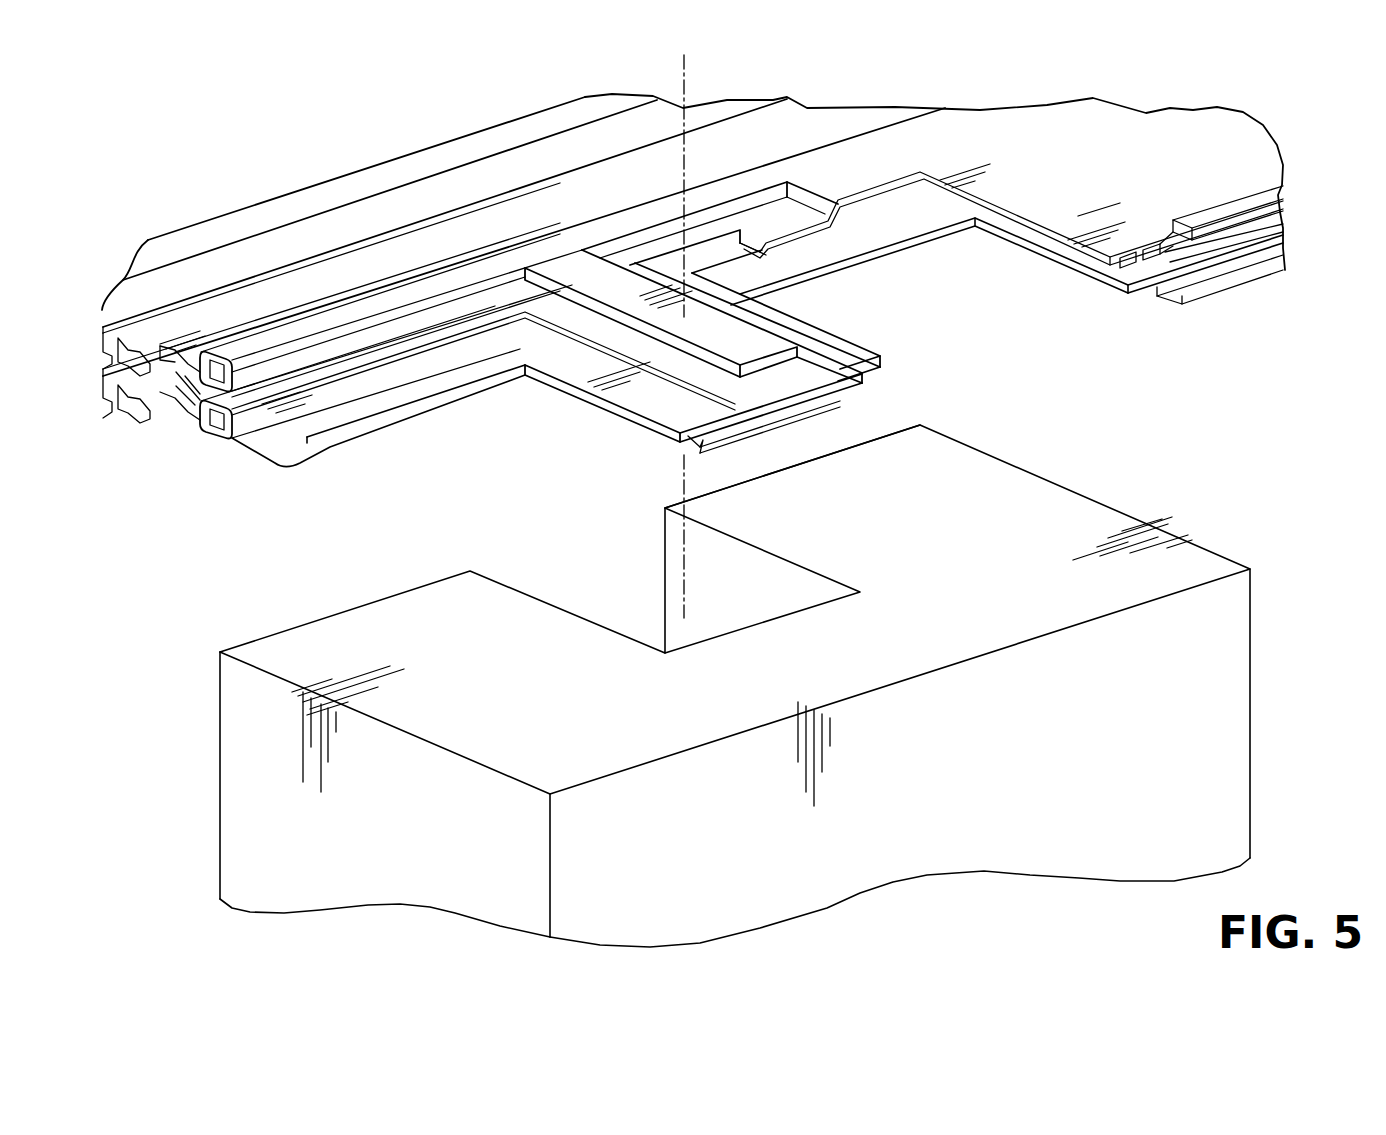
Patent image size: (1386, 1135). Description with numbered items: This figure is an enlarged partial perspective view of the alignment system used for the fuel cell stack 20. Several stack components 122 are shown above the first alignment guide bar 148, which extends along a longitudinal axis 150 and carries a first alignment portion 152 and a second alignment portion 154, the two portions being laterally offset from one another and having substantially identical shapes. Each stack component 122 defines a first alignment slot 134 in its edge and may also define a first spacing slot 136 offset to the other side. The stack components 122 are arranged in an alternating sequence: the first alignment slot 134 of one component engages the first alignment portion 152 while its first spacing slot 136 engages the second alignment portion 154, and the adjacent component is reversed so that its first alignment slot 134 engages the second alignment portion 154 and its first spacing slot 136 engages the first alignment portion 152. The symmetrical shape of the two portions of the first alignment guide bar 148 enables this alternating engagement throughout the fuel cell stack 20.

The fuel cell stack 20 is at (1042, 84).
The stack components 122 is at (1173, 127).
The first alignment slot 134 is at (980, 203).
The first spacing slot 136 is at (396, 355).
The first alignment guide bar 148 is at (1212, 657).
The longitudinal axis 150 is at (683, 543).
The first alignment portion 152 is at (391, 622).
The second alignment portion 154 is at (868, 455).